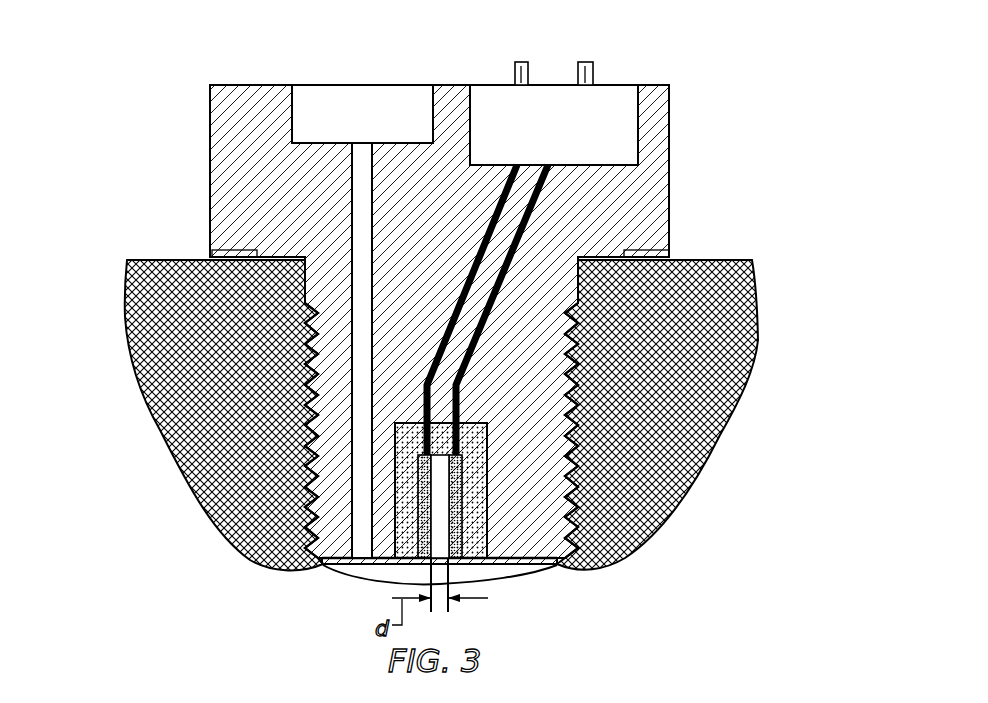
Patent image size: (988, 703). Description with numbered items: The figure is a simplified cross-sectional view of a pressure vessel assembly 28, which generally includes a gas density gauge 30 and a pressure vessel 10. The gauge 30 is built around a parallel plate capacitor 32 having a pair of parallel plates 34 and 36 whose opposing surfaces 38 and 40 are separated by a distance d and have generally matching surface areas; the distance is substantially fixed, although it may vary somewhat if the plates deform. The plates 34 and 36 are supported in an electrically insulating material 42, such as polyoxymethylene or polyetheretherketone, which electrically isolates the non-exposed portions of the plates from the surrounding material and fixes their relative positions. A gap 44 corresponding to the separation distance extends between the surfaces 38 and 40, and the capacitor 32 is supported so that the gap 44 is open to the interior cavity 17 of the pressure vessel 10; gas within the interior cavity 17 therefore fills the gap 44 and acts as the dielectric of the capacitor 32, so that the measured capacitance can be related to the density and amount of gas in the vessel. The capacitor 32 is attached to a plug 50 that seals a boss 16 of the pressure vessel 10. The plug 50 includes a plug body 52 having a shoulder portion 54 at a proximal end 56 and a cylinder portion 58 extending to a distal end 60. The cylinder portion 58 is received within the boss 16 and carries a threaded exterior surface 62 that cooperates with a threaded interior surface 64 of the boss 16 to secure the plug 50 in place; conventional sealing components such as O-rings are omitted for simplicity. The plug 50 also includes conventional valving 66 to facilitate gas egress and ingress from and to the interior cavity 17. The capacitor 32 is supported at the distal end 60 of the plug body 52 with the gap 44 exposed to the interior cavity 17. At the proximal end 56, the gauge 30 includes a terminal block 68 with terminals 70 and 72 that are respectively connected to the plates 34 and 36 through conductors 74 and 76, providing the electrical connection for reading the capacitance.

The pressure vessel 10 is at (786, 259).
The boss 16 is at (155, 265).
The interior cavity 17 is at (355, 565).
The pressure vessel assembly 28 is at (141, 61).
The gas density gauge 30 is at (547, 598).
The parallel plate capacitor 32 is at (474, 442).
The parallel plate 34 is at (436, 497).
The parallel plate 36 is at (456, 470).
The opposing surface 38 is at (448, 490).
The opposing surface 40 is at (446, 512).
The electrically insulating material 42 is at (407, 447).
The gap 44 is at (454, 562).
The plug 50 is at (657, 168).
The plug body 52 is at (227, 190).
The shoulder portion 54 is at (223, 128).
The proximal end 56 is at (664, 118).
The cylinder portion 58 is at (545, 512).
The distal end 60 is at (333, 560).
The threaded exterior surface 62 is at (297, 339).
The threaded interior surface 64 is at (321, 299).
The valving 66 is at (305, 88).
The terminal block 68 is at (626, 85).
The terminal 70 is at (521, 62).
The terminal 72 is at (587, 62).
The conductor 74 is at (497, 212).
The conductor 76 is at (530, 213).